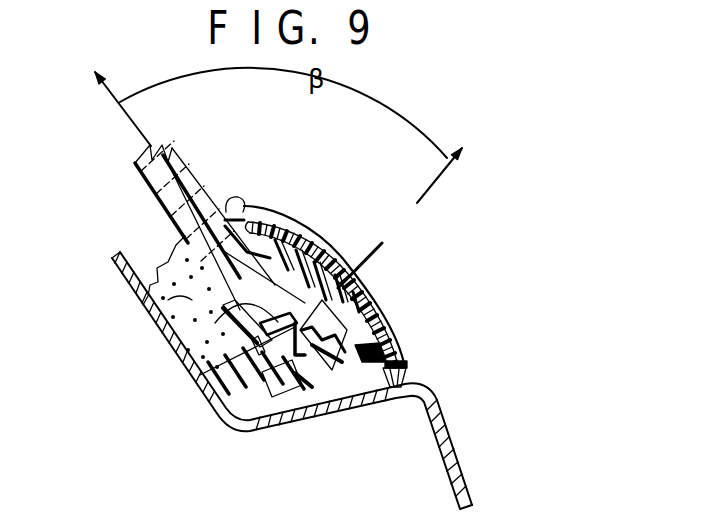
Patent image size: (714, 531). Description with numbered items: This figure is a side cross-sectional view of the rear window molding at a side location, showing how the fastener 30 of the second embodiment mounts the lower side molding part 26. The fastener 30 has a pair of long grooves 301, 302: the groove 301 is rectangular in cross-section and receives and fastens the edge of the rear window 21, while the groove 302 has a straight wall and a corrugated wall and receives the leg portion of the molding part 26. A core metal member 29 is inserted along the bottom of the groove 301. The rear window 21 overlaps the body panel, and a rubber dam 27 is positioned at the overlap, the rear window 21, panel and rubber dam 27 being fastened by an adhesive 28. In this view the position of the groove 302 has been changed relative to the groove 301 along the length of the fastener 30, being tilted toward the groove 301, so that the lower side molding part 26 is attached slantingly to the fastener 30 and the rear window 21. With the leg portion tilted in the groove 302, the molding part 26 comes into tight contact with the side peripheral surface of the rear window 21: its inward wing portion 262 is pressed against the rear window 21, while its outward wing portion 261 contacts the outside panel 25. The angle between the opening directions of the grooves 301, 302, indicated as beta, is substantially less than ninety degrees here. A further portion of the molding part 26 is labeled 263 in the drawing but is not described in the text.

The rear window 21 is at (183, 188).
The outside panel 25 is at (123, 278).
The lower side molding part 26 is at (360, 254).
The outward wing portion 261 is at (392, 374).
The inward wing portion 262 is at (238, 208).
The inner wall of casing 263 is at (338, 328).
The rubber dam 27 is at (230, 388).
The adhesive 28 is at (150, 330).
The core metal member 29 is at (232, 382).
The fastener 30 is at (308, 397).
The groove 301 is at (230, 328).
The groove 302 is at (268, 392).